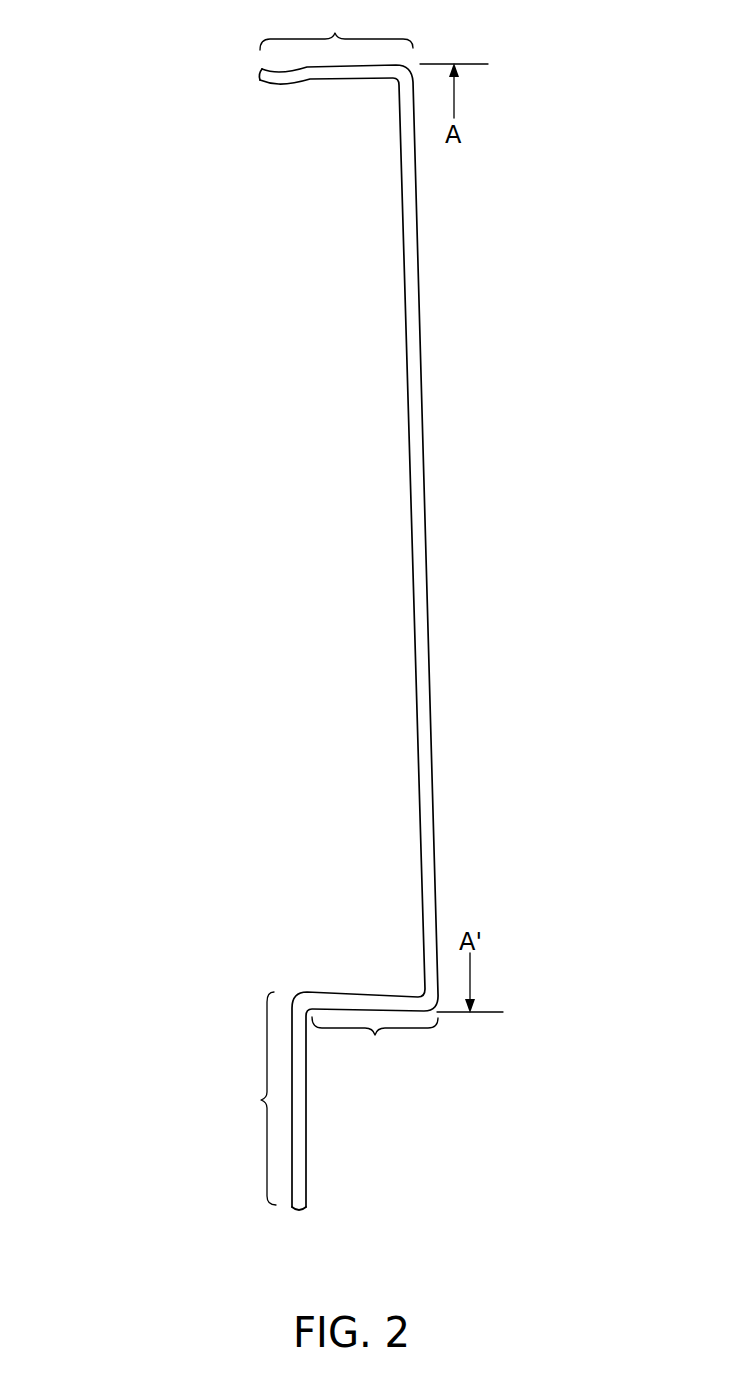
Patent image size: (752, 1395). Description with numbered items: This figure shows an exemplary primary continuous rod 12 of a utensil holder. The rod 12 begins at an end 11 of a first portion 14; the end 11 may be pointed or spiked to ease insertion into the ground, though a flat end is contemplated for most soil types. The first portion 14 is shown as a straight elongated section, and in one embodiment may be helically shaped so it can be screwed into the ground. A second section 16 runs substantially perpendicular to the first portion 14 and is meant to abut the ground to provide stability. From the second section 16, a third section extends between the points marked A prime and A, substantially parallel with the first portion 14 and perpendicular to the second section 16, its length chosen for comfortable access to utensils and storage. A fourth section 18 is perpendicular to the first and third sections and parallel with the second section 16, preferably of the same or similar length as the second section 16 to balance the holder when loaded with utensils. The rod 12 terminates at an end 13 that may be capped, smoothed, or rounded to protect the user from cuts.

The end 11 is at (299, 1211).
The primary continuous rod 12 is at (118, 72).
The end 13 is at (259, 75).
The first portion 14 is at (252, 1098).
The second section 16 is at (375, 1043).
The fourth section 18 is at (441, 505).